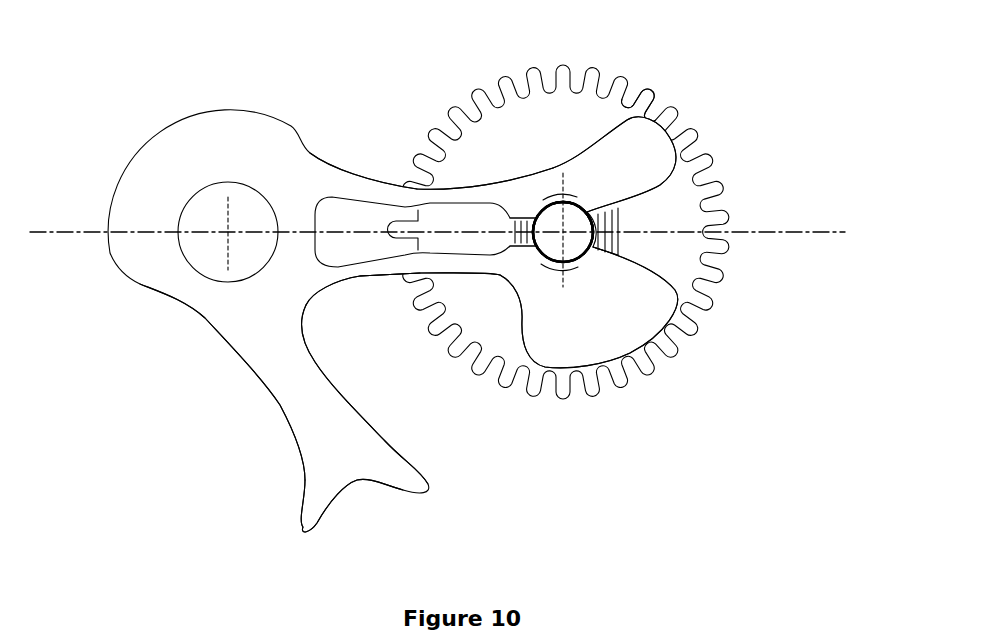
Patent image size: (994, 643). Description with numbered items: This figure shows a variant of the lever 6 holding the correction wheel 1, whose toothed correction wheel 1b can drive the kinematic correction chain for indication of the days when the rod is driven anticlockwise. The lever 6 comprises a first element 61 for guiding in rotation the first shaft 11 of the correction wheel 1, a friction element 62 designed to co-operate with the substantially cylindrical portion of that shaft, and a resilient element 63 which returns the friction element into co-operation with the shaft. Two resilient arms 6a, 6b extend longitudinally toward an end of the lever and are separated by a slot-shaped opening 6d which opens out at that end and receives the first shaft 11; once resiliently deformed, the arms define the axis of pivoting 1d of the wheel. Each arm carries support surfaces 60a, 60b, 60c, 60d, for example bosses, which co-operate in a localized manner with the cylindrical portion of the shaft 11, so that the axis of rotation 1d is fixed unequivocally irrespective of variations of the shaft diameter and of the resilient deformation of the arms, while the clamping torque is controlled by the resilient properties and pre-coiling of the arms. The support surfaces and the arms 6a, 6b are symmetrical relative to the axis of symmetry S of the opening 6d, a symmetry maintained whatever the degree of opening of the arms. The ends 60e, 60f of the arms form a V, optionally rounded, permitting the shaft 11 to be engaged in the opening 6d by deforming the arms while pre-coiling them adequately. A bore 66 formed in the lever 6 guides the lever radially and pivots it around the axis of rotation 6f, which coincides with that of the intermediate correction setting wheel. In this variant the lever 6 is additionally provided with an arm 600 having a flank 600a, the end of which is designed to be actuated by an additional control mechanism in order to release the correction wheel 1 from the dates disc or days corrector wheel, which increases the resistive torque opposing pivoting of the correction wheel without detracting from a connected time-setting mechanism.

The correction wheel 1 is at (707, 116).
The correction wheel 1b is at (650, 118).
The axis of pivoting 1d is at (596, 232).
The first shaft 11 is at (597, 242).
The lever 6 is at (215, 96).
The resilient arm 6a is at (445, 200).
The resilient arm 6b is at (398, 267).
The opening 6d is at (349, 206).
The axis of rotation 6f is at (228, 232).
The resilient element 63 is at (377, 175).
The opening 66 is at (207, 205).
The support surface 60a is at (538, 205).
The support surface 60b is at (584, 206).
The support surface 60c is at (535, 250).
The support surface 60d is at (590, 250).
The end of resilient arm 60e is at (677, 160).
The end of resilient arm 60f is at (678, 297).
The first element for guiding in rotation 61 is at (548, 178).
The friction element 62 is at (548, 281).
The arm 600 is at (311, 398).
The flank 600a is at (357, 486).
The axis of symmetry S is at (447, 233).